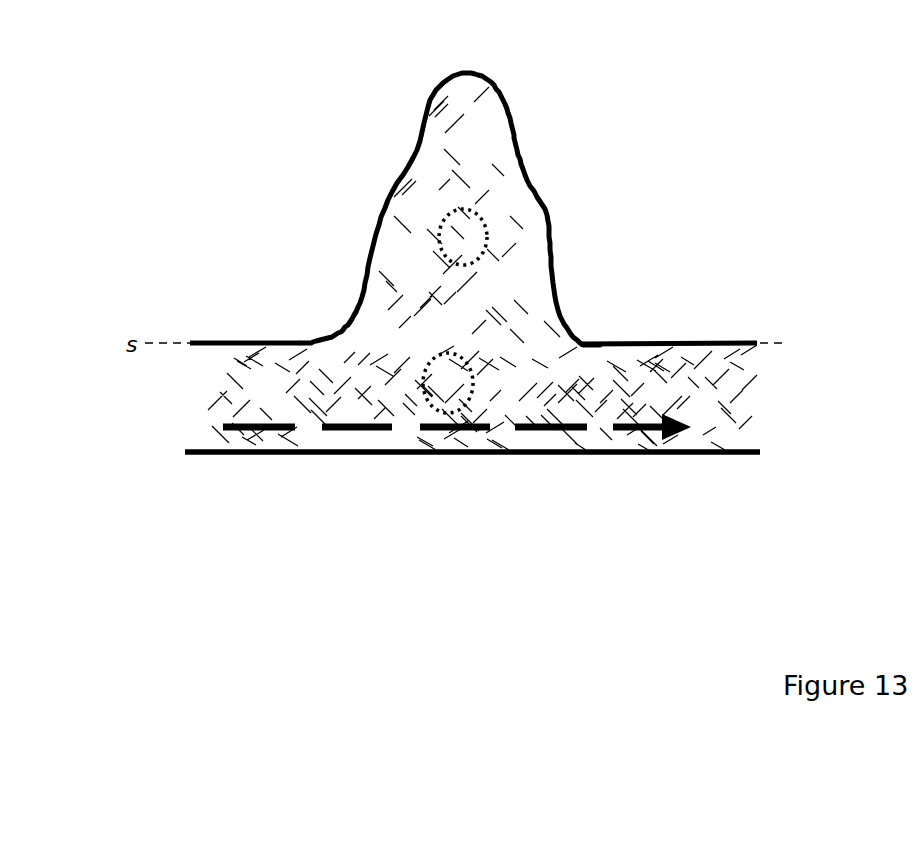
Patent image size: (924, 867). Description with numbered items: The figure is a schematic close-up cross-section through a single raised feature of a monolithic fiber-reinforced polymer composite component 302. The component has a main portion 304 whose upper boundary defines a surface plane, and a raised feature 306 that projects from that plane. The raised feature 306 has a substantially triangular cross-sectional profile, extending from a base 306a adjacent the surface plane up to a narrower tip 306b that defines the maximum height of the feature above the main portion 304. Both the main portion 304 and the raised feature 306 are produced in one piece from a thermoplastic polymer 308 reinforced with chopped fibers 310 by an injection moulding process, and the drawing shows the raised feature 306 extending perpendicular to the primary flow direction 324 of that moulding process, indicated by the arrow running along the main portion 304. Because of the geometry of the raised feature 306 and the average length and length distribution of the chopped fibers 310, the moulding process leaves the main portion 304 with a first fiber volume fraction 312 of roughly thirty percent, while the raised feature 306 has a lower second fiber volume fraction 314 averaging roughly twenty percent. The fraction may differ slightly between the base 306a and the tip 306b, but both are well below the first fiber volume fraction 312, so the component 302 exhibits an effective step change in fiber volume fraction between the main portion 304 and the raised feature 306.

The FRP composite component 302 is at (168, 113).
The main portion 304 is at (700, 345).
The raised feature 306 is at (390, 198).
The base 306a is at (352, 290).
The tip 306b is at (428, 90).
The thermoplastic polymer 308 is at (298, 410).
The chopped fibers 310 is at (288, 396).
The first fiber volume fraction 312 is at (468, 404).
The second fiber volume fraction 314 is at (487, 231).
The primary flow direction 324 is at (665, 418).